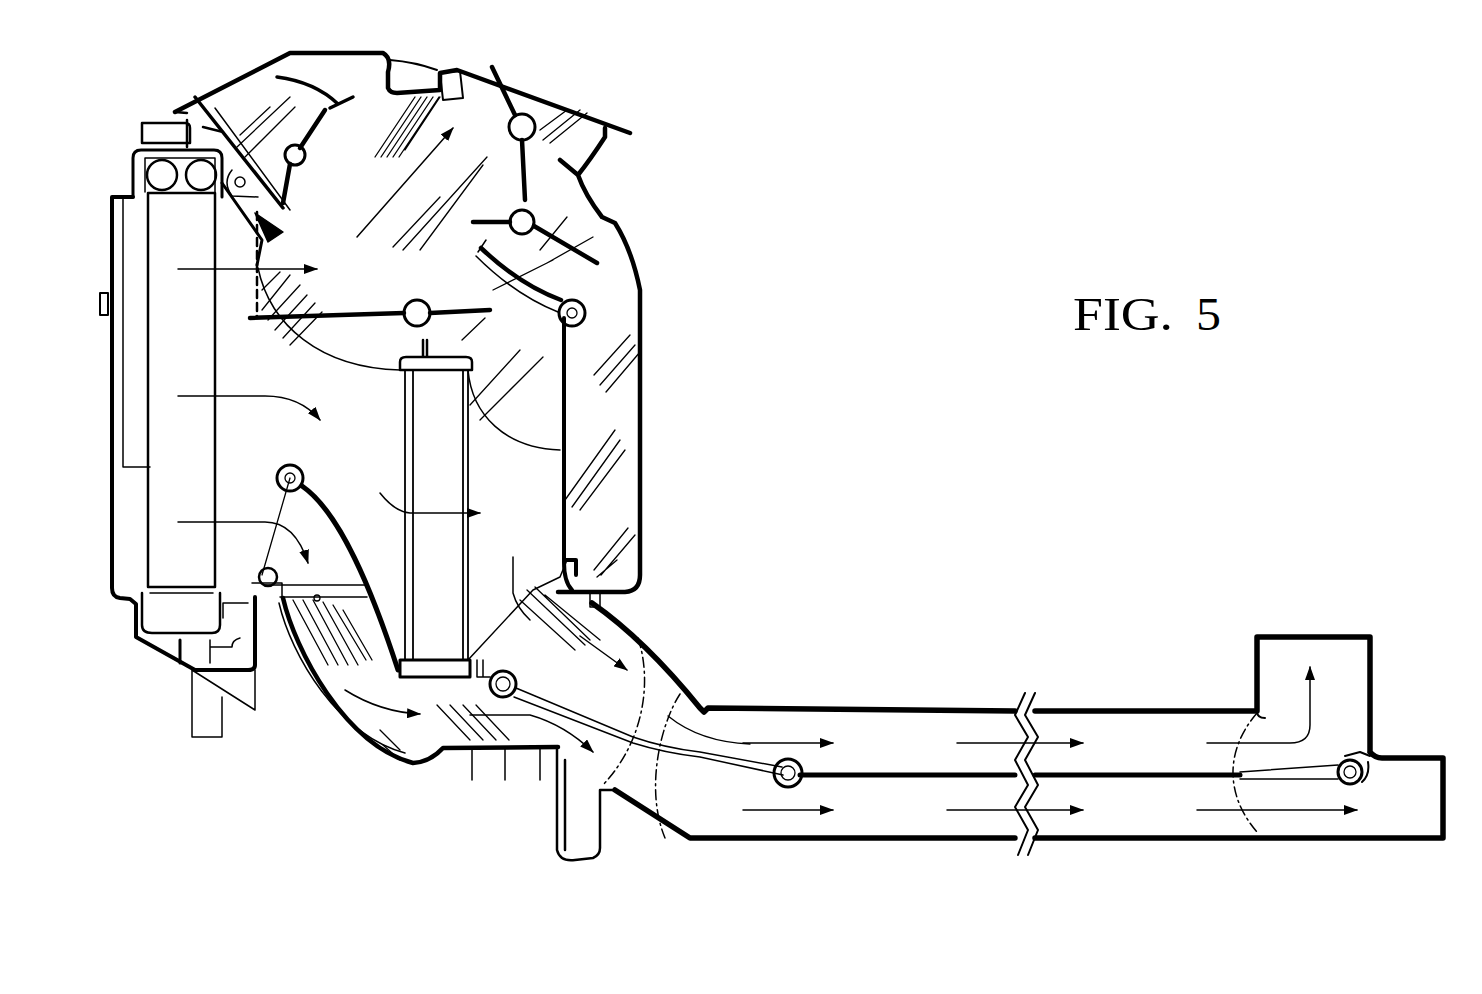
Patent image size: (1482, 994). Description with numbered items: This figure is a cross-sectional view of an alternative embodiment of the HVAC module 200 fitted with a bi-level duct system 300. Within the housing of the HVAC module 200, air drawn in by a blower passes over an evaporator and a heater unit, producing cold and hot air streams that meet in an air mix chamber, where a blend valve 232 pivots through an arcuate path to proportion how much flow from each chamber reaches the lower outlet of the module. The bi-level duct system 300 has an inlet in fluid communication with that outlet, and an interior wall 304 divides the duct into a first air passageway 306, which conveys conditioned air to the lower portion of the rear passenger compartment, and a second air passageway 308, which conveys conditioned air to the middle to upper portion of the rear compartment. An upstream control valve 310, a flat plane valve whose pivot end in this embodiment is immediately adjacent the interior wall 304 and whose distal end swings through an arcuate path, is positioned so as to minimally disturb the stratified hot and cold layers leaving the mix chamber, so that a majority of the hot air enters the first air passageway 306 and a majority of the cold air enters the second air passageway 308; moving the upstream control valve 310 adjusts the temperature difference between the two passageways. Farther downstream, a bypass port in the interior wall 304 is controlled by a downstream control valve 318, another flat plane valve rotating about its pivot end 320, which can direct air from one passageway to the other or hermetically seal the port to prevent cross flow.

The HVAC module 200 is at (717, 132).
The blend valve 232 is at (553, 705).
The bi-level duct system 300 is at (1345, 858).
The interior wall 304 is at (920, 773).
The first air passageway 306 is at (1117, 740).
The second air passageway 308 is at (1145, 820).
The upstream control valve 310 is at (737, 758).
The downstream control valve 318 is at (1293, 778).
The pivot end 320 is at (1356, 764).